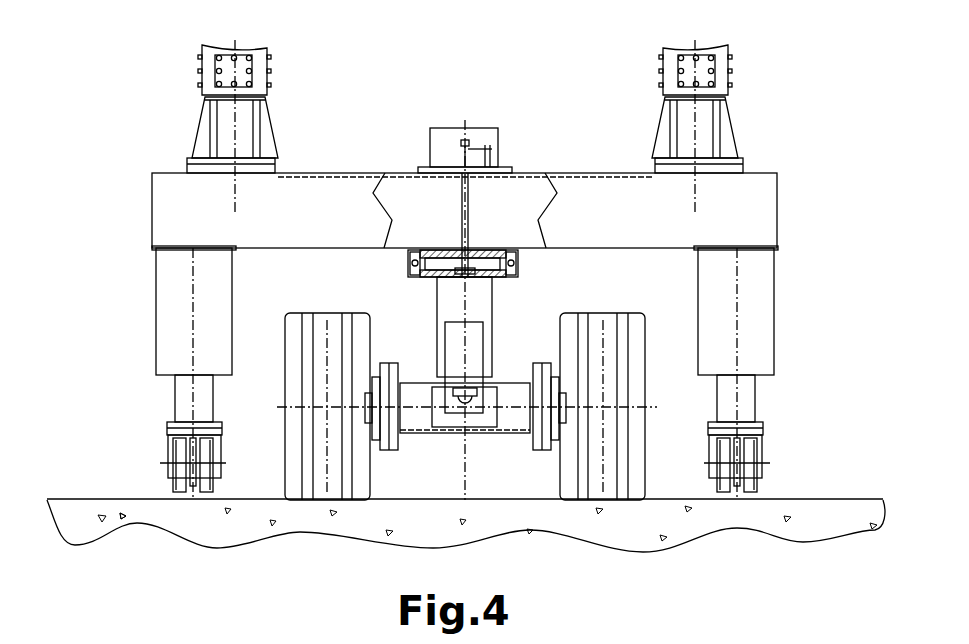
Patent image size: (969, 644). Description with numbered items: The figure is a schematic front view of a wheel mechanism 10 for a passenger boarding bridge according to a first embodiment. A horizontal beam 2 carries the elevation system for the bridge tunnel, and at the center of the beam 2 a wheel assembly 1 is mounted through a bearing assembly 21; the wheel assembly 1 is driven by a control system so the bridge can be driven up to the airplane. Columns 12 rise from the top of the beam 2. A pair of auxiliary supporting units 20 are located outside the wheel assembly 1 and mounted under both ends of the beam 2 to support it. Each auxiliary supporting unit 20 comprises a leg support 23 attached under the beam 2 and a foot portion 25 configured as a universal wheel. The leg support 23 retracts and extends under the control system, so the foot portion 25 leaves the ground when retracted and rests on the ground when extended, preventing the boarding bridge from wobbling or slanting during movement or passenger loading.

The wheel assembly 1 is at (562, 270).
The beam 2 is at (499, 194).
The wheel mechanism 10 is at (461, 99).
The support columns 12 is at (210, 78).
The auxiliary supporting unit 20 is at (143, 352).
The bearing assembly 21 is at (526, 272).
The leg support 23 is at (743, 312).
The foot portion 25 is at (737, 467).